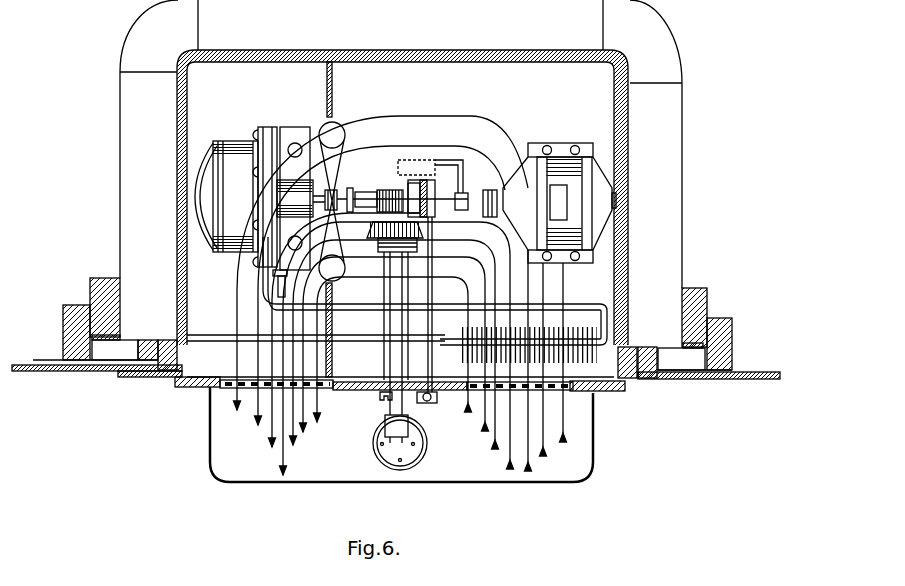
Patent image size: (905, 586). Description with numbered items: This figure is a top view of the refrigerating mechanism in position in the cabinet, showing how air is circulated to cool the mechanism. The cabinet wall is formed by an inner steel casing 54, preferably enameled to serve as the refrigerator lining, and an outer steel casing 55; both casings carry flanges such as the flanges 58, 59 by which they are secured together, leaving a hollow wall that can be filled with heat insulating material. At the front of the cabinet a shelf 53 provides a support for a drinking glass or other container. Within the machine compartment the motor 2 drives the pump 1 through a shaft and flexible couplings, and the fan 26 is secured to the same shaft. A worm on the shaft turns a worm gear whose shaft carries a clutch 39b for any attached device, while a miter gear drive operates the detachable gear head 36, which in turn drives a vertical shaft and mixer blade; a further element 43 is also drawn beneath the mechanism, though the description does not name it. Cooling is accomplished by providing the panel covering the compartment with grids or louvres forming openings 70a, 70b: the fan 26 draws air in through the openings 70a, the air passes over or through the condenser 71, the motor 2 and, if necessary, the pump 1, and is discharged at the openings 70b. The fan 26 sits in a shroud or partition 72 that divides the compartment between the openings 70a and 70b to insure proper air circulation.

The pump 1 is at (229, 140).
The motor 2 is at (563, 153).
The fan 26 is at (343, 128).
The gear head 36 is at (418, 465).
The clutch 39b is at (380, 395).
The valve 43 is at (428, 407).
The shelf 53 is at (585, 474).
The inner steel casing 54 is at (185, 135).
The outer steel casing 55 is at (686, 213).
The flange 58 is at (110, 340).
The flange 59 is at (690, 355).
The openings 70a is at (560, 397).
The openings 70b is at (250, 390).
The condenser 71 is at (573, 325).
The shroud or partition 72 is at (335, 94).